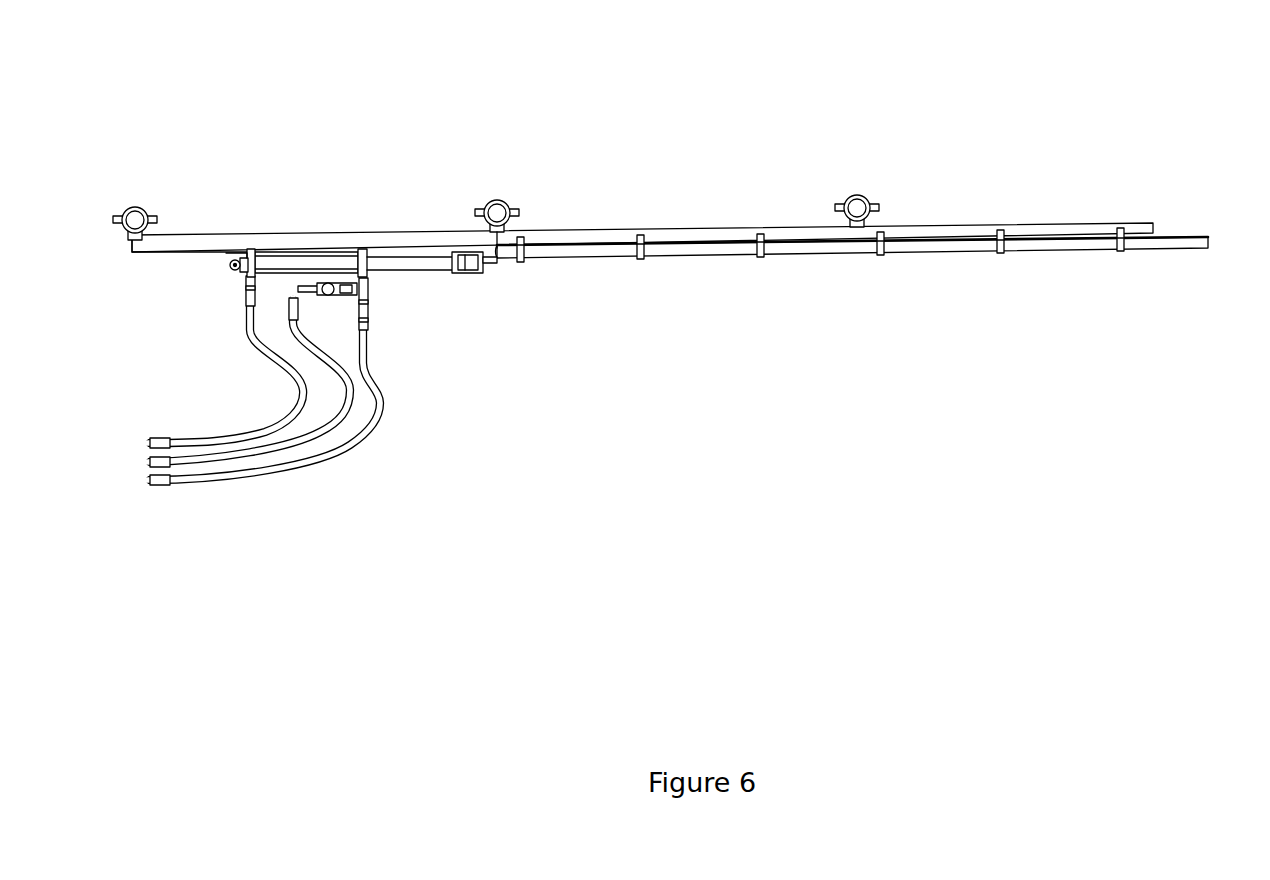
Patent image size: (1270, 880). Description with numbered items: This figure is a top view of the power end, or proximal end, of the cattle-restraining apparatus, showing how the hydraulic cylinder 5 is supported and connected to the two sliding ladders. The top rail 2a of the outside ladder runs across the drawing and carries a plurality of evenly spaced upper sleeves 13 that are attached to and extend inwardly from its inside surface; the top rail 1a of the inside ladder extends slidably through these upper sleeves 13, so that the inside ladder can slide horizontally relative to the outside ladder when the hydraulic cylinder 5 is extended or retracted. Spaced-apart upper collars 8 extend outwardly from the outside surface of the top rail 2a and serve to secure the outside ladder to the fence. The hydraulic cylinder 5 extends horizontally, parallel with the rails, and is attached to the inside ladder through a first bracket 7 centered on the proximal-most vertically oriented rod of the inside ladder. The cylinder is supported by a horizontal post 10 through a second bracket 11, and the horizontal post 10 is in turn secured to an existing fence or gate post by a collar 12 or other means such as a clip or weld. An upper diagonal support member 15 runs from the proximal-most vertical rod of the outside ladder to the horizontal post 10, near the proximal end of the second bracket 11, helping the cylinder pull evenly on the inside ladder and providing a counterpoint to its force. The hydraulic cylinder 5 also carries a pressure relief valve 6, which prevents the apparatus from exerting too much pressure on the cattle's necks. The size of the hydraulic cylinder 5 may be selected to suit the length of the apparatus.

The top rail of the inside ladder 1a is at (675, 254).
The top rail of the outside ladder 2a is at (704, 232).
The hydraulic cylinder 5 is at (210, 362).
The pressure relief valve 6 is at (362, 297).
The first bracket 7 is at (497, 262).
The upper collar 8 is at (499, 203).
The horizontal post 10 is at (186, 247).
The second bracket 11 is at (227, 256).
The collar 12 is at (140, 205).
The upper sleeve 13 is at (523, 236).
The upper diagonal support member 15 is at (365, 243).